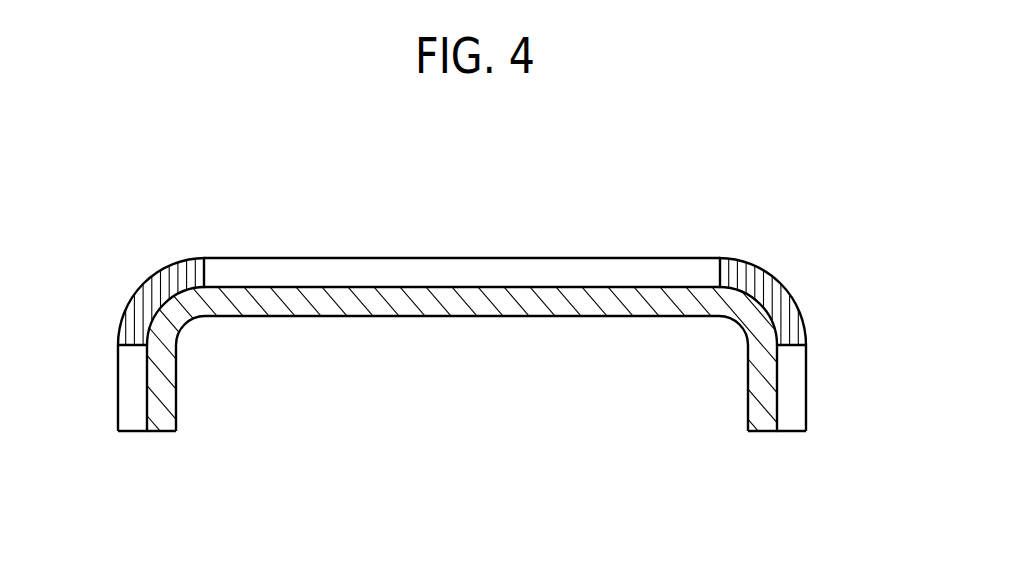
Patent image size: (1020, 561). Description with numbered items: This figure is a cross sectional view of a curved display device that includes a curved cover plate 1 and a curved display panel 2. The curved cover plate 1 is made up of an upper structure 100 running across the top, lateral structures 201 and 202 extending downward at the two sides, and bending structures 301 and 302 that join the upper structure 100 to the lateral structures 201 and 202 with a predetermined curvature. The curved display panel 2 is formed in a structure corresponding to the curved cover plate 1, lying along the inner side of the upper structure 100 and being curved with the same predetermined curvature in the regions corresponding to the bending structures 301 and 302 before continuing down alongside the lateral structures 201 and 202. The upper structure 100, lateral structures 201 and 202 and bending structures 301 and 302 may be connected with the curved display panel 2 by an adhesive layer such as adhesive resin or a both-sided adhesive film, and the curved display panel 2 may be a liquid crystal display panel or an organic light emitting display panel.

The curved cover plate 1 is at (763, 227).
The curved display panel 2 is at (763, 423).
The upper structure 100 is at (459, 270).
The lateral structure 201 is at (799, 388).
The lateral structure 202 is at (127, 387).
The bending structure 301 is at (778, 289).
The bending structure 302 is at (146, 289).